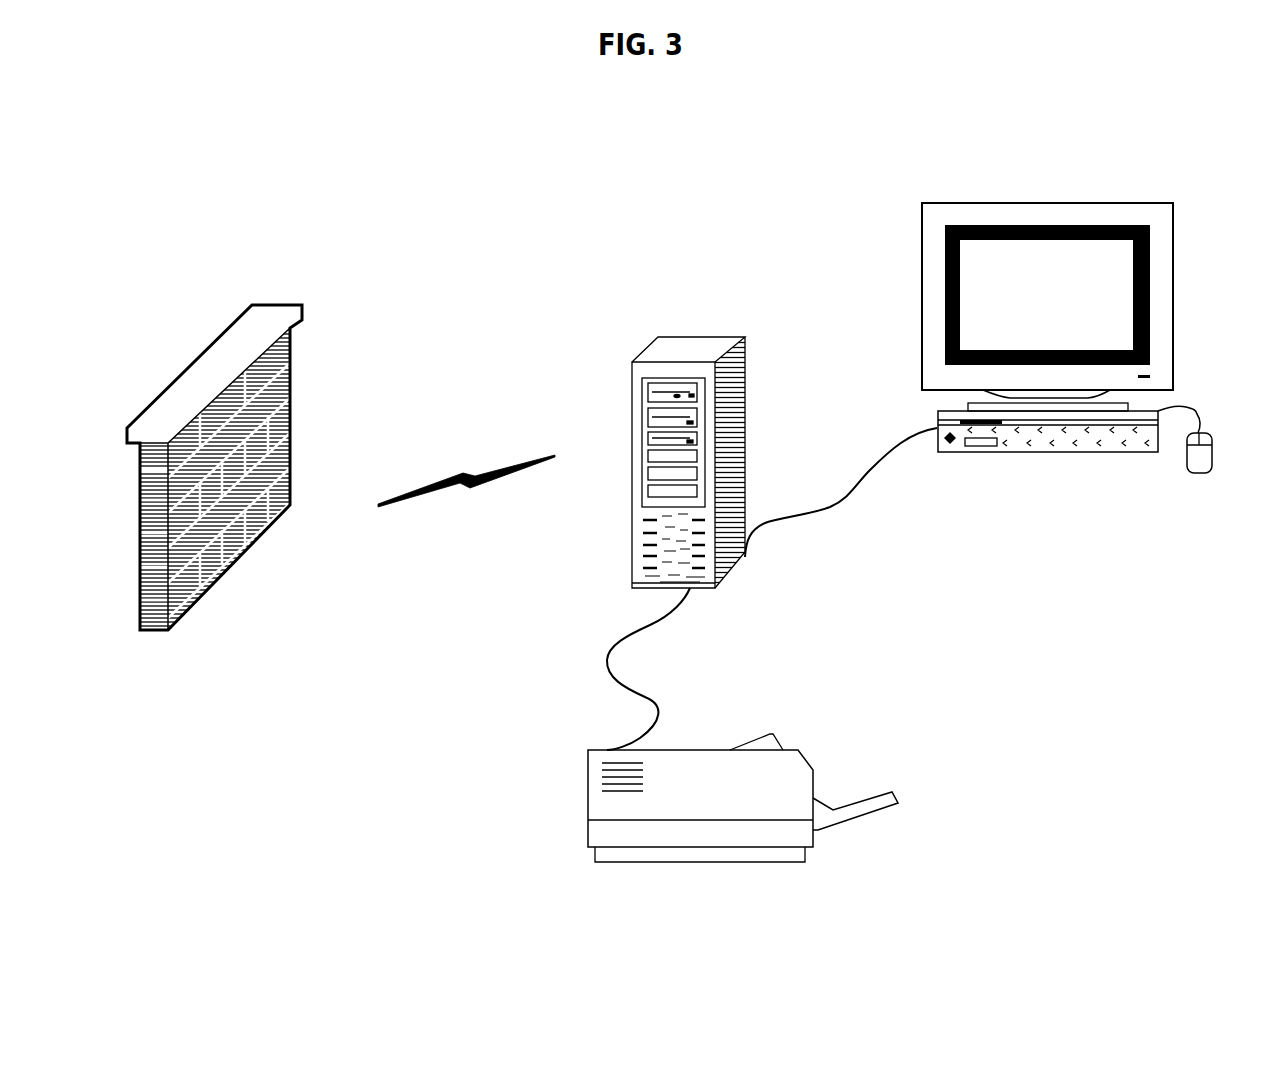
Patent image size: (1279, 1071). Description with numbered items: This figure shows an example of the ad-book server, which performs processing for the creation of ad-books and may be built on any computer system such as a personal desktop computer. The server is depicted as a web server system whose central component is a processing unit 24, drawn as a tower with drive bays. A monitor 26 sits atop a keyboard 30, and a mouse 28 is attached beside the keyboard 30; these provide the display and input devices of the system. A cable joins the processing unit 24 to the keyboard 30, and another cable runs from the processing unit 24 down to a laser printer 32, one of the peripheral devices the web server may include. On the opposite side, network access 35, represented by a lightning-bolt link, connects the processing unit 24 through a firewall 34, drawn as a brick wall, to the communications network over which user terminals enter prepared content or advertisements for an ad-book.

The processing unit 24 is at (688, 449).
The monitor 26 is at (1047, 307).
The mouse 28 is at (1195, 467).
The keyboard 30 is at (1048, 459).
The laser printer 32 is at (743, 829).
The firewall 34 is at (207, 499).
The network access 35 is at (466, 446).